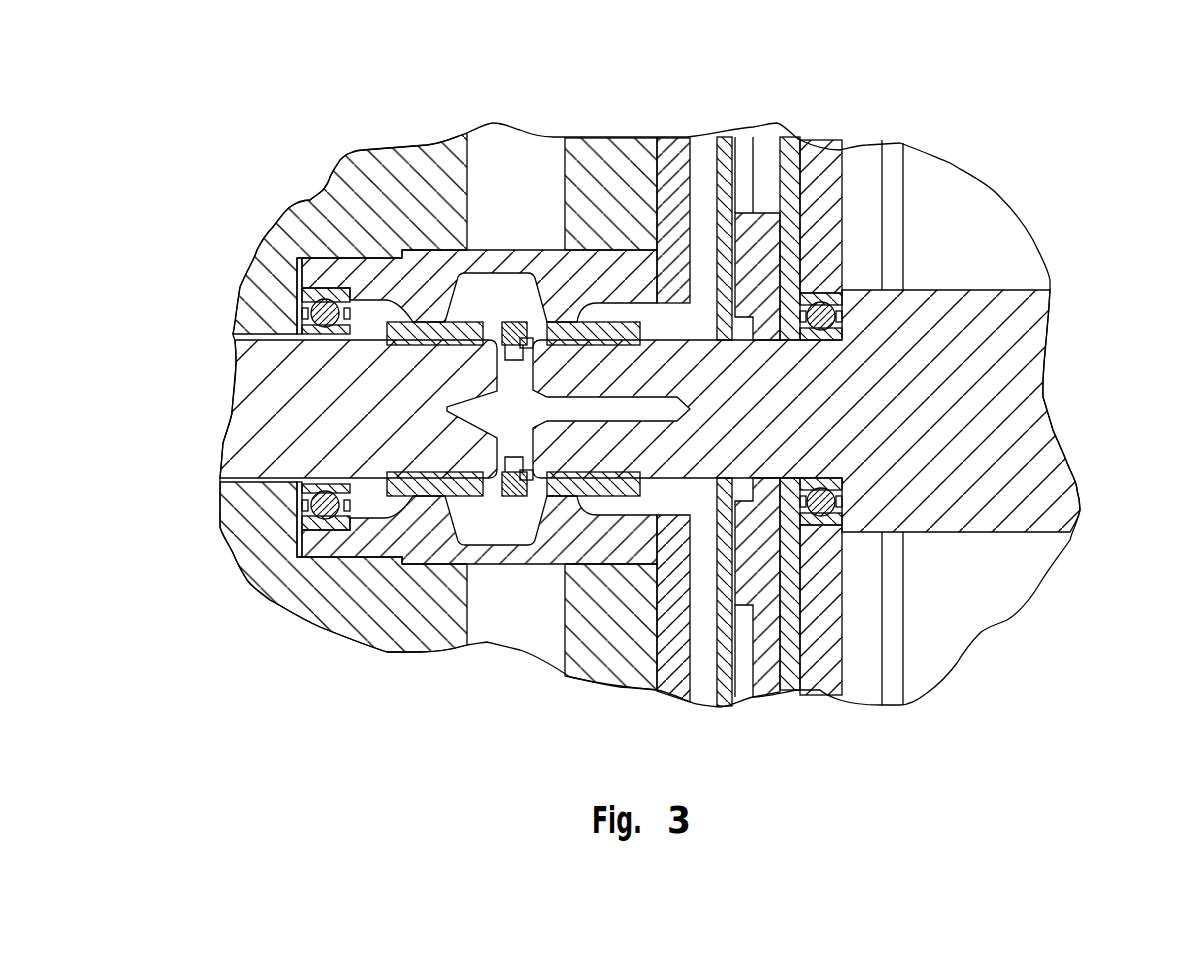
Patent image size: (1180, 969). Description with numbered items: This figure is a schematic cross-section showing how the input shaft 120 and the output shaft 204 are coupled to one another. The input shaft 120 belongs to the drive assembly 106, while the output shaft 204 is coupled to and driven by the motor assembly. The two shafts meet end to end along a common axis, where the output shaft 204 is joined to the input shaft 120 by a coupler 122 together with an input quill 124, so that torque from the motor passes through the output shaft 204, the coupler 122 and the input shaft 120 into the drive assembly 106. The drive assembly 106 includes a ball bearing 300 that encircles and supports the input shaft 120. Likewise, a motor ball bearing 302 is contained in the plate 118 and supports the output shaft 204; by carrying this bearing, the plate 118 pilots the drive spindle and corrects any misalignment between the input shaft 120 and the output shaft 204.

The drive assembly 106 is at (296, 194).
The plate 118 is at (779, 150).
The input shaft 120 is at (257, 420).
The coupler 122 is at (513, 333).
The input quill 124 is at (548, 540).
The output shaft 204 is at (1030, 400).
The ball bearing 300 is at (318, 500).
The motor ball bearing 302 is at (882, 537).